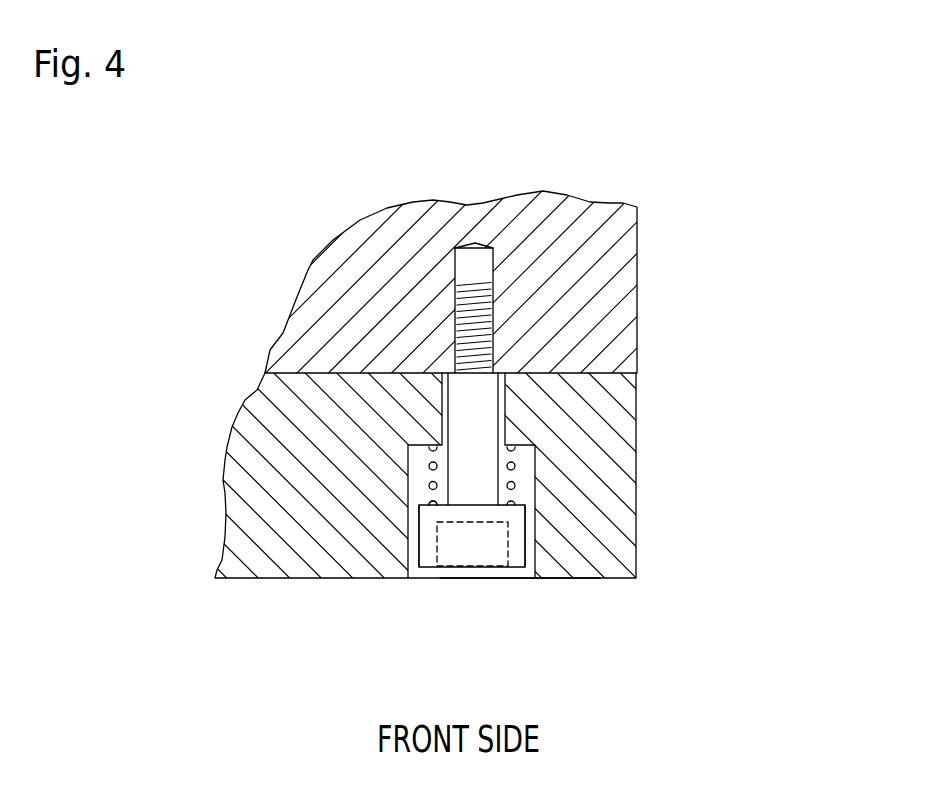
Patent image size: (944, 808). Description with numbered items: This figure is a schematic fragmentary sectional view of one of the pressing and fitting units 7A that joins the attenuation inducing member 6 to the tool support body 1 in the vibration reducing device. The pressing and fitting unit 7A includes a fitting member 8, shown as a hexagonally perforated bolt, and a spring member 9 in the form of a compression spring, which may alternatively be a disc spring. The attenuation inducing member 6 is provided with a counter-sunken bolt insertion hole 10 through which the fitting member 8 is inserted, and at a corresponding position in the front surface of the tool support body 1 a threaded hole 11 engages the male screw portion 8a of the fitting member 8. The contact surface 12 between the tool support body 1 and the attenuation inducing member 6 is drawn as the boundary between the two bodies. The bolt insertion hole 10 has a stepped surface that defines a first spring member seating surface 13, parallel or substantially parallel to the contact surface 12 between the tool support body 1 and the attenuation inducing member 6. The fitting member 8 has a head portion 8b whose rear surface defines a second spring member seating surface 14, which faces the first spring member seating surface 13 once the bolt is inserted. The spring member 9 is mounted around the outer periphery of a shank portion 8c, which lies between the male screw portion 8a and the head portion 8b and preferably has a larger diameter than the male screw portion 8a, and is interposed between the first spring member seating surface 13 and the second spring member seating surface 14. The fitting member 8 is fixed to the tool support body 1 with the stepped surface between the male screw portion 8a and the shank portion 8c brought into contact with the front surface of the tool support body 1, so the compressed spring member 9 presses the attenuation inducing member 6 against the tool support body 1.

The tool support body 1 is at (580, 235).
The attenuation inducing member 6 is at (617, 558).
The pressing and fitting unit 7A is at (518, 592).
The fitting member 8 is at (473, 568).
The male screw portion 8a is at (487, 322).
The head portion 8b is at (525, 540).
The shank portion 8c is at (482, 470).
The spring member 9 is at (430, 487).
The bolt insertion hole 10 is at (420, 540).
The threaded hole 11 is at (453, 296).
The joint surface 12 is at (347, 372).
The first spring member seating surface 13 is at (408, 458).
The second spring member seating surface 14 is at (426, 503).